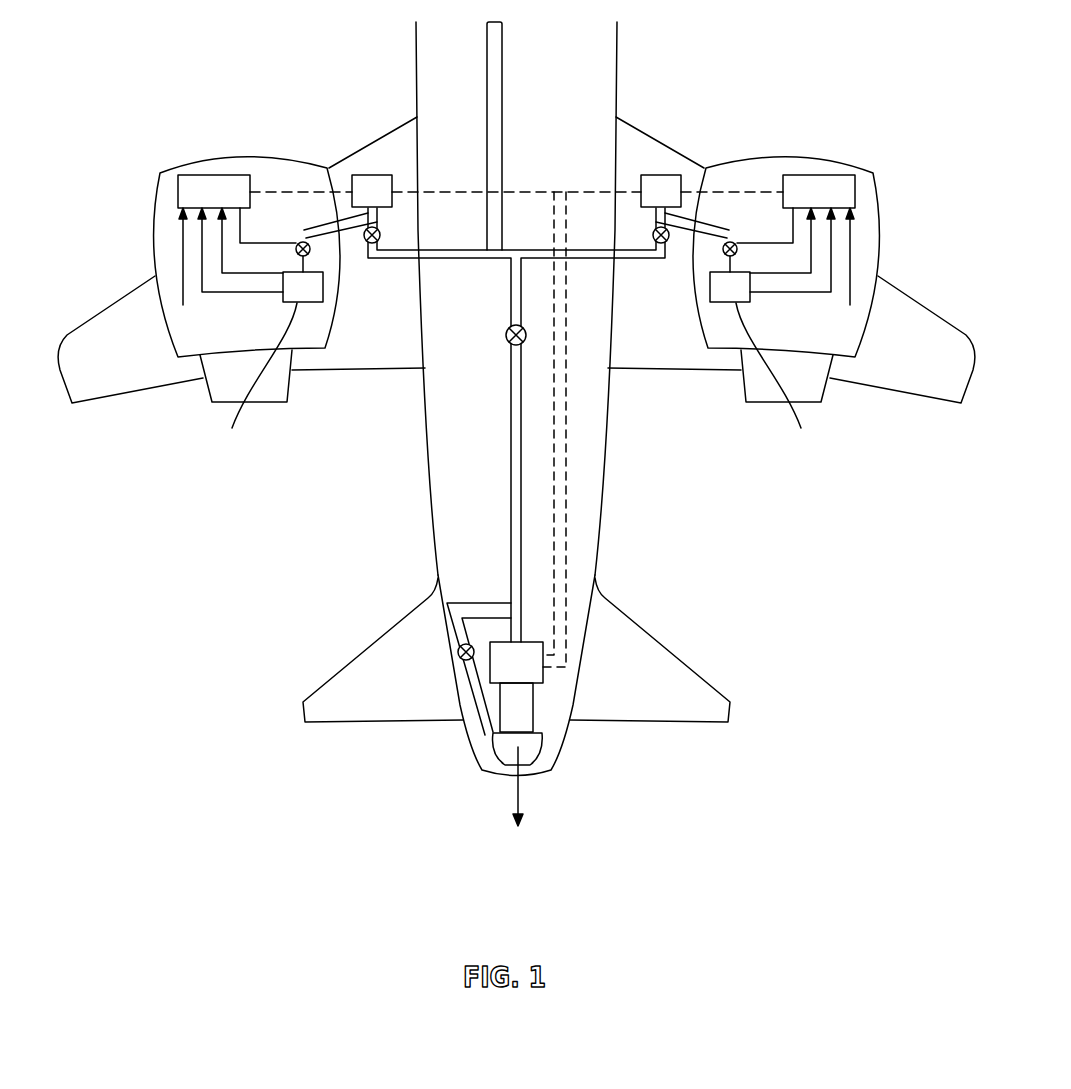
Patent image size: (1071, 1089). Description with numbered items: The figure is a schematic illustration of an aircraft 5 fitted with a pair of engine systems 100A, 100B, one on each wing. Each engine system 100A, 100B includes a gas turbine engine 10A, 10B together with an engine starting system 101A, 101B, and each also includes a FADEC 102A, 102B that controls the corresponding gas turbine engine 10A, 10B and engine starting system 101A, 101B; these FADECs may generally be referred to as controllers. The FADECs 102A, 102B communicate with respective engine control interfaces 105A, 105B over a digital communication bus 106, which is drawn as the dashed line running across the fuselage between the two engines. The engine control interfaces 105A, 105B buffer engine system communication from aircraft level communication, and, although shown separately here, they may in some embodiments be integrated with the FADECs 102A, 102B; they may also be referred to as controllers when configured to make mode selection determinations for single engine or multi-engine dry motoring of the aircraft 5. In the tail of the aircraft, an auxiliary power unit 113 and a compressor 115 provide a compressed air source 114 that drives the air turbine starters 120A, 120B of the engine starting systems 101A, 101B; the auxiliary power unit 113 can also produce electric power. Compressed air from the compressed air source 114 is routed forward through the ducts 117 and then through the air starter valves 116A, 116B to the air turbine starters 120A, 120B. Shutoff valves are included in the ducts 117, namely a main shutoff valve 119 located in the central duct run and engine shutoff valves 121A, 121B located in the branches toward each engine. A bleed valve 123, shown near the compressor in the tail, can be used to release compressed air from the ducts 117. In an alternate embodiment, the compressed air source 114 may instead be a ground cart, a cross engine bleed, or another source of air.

The aircraft 5 is at (553, 98).
The gas turbine engine 10A is at (265, 286).
The gas turbine engine 10B is at (777, 286).
The engine system 100A is at (326, 46).
The engine system 100B is at (722, 46).
The engine starting system 101A is at (344, 312).
The engine starting system 101B is at (689, 312).
The FADEC 102A is at (203, 175).
The FADEC 102B is at (830, 175).
The engine control interface 105A is at (363, 175).
The engine control interface 105B is at (670, 175).
The digital communication bus 106 is at (554, 183).
The auxiliary power unit 113 is at (535, 718).
The compressed air source 114 is at (587, 699).
The compressor 115 is at (534, 640).
The air starter valve 116A is at (300, 232).
The air starter valve 116B is at (733, 232).
The ducts 117 is at (510, 478).
The main shutoff valve 119 is at (506, 333).
The air turbine starter 120A is at (261, 359).
The air turbine starter 120B is at (773, 359).
The engine shutoff valve 121A is at (381, 233).
The engine shutoff valve 121B is at (653, 233).
The bleed valve 123 is at (457, 650).